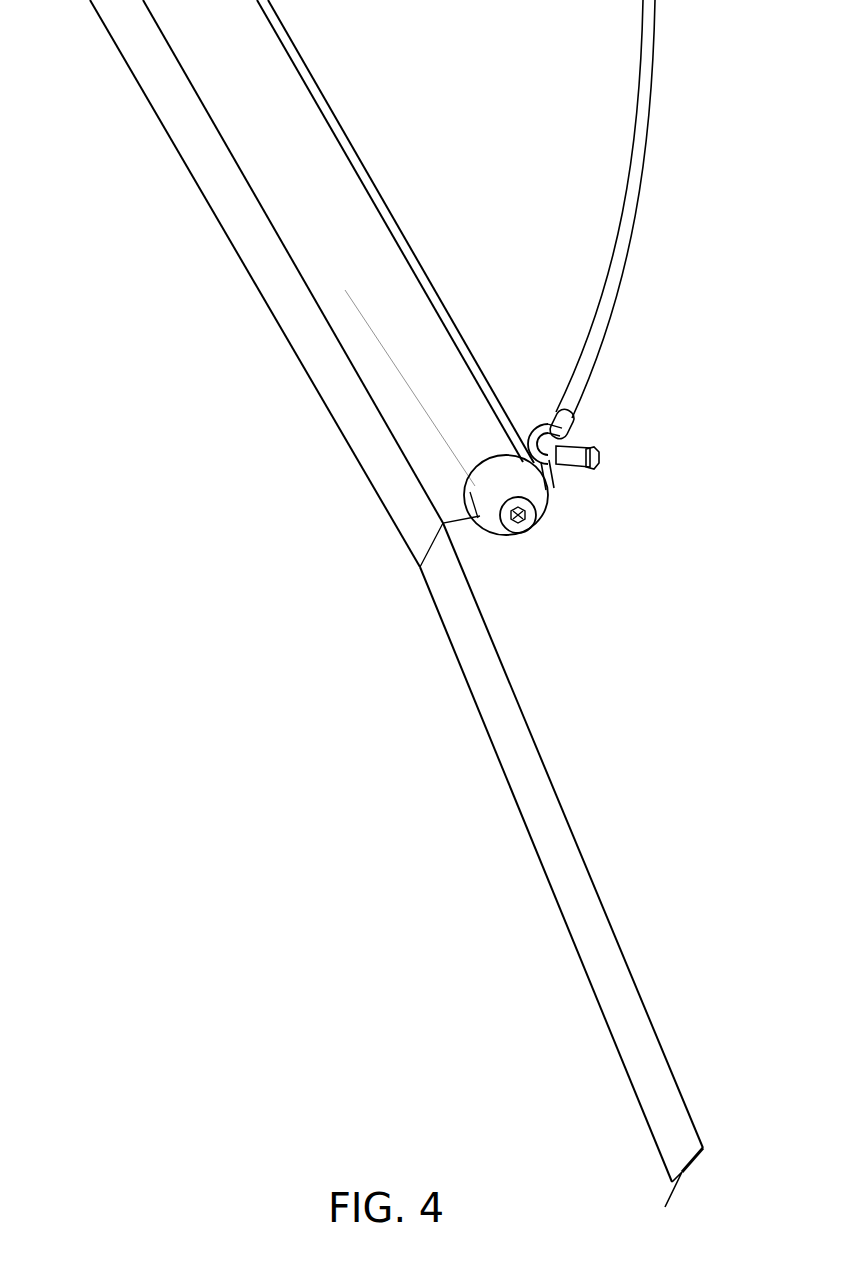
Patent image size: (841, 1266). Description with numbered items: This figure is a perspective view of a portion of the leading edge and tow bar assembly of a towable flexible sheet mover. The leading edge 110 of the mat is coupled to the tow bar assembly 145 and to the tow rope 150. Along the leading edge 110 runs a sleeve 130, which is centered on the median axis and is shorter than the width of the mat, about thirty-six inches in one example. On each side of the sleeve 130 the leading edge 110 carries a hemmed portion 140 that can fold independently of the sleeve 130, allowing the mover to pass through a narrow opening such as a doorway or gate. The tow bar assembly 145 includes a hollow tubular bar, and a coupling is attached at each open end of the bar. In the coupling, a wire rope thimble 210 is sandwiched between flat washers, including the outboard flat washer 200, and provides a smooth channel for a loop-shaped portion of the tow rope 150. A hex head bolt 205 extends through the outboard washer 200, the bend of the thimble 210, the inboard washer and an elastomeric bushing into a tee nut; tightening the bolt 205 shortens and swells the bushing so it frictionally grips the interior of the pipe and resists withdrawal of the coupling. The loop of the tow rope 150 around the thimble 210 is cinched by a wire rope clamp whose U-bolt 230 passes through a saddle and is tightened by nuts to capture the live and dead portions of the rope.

The leading edge 110 is at (216, 218).
The sleeve 130 is at (333, 110).
The hemmed portion 140 is at (566, 812).
The tow bar assembly 145 is at (478, 518).
The tow rope 150 is at (610, 245).
The outboard flat washer 200 is at (497, 525).
The bolt 205 is at (527, 527).
The wire rope thimble 210 is at (548, 493).
The U-bolt 230 is at (560, 463).